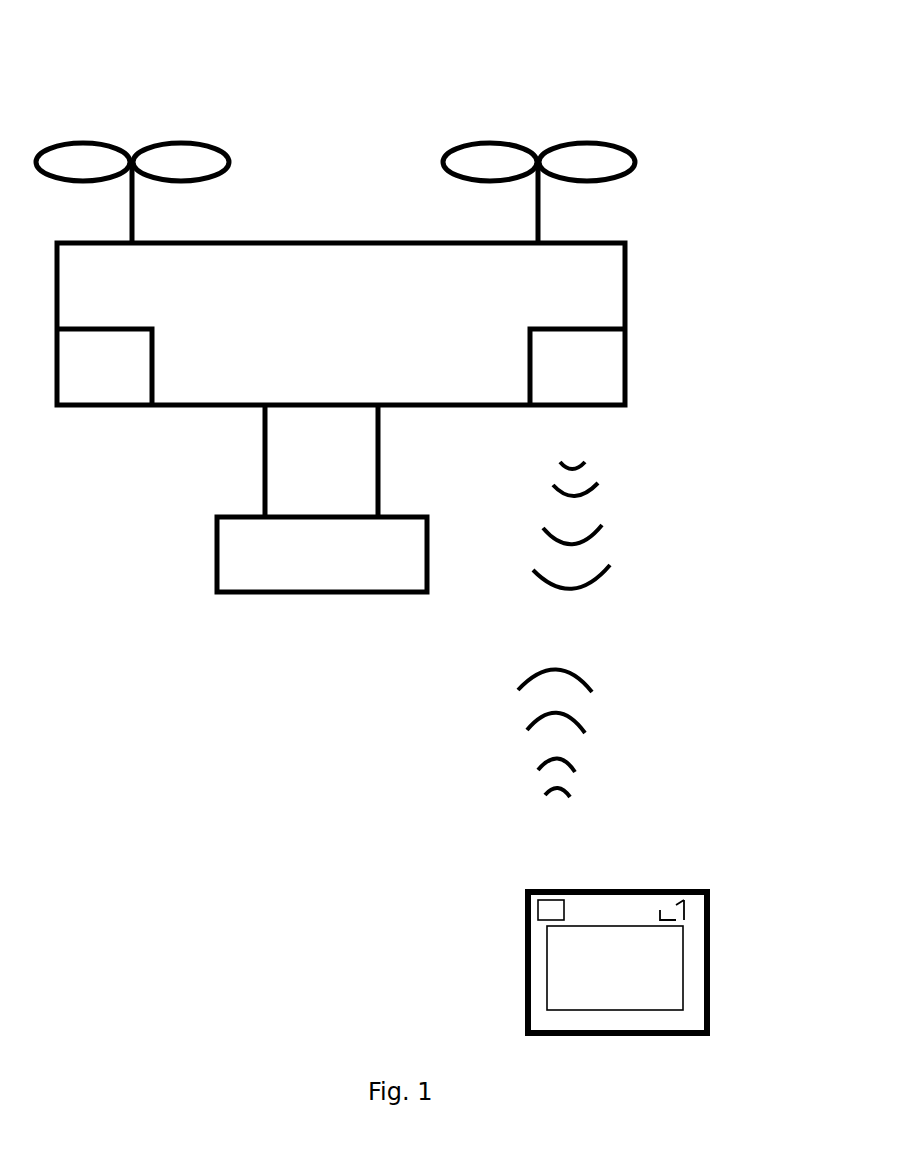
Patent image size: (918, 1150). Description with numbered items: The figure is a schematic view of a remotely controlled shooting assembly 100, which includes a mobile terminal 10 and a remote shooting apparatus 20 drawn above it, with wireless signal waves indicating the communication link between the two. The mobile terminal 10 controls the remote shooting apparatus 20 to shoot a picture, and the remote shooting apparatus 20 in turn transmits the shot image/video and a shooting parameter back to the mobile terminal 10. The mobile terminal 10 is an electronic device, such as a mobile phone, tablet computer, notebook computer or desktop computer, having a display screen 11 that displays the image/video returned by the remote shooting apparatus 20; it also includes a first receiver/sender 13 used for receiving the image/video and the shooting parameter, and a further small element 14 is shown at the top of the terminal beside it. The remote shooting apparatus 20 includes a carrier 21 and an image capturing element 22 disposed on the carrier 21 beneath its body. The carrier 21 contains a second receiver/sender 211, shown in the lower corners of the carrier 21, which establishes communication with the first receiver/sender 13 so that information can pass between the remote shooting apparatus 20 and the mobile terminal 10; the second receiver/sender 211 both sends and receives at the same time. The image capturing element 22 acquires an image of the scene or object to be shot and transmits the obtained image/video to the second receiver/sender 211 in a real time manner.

The remotely controlled shooting assembly 100 is at (251, 66).
The remote shooting apparatus 20 is at (396, 165).
The carrier 21 is at (597, 277).
The second receiver/sender 211 is at (597, 363).
The image capturing element 22 is at (253, 551).
The mobile terminal 10 is at (540, 970).
The display screen 11 is at (657, 957).
The first receiver/sender 13 is at (531, 892).
The indicator 14 is at (680, 892).